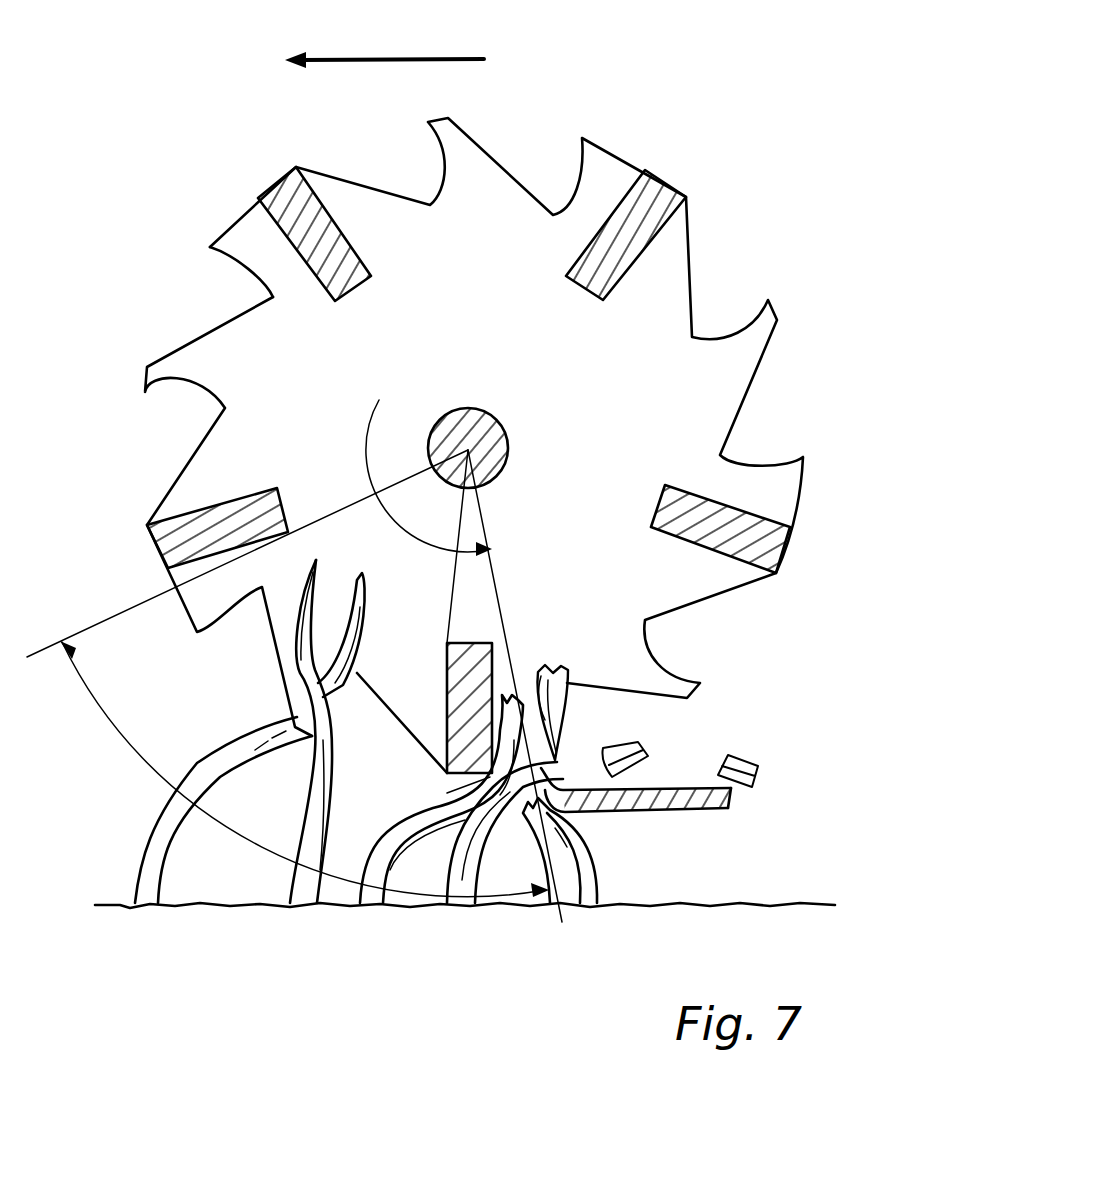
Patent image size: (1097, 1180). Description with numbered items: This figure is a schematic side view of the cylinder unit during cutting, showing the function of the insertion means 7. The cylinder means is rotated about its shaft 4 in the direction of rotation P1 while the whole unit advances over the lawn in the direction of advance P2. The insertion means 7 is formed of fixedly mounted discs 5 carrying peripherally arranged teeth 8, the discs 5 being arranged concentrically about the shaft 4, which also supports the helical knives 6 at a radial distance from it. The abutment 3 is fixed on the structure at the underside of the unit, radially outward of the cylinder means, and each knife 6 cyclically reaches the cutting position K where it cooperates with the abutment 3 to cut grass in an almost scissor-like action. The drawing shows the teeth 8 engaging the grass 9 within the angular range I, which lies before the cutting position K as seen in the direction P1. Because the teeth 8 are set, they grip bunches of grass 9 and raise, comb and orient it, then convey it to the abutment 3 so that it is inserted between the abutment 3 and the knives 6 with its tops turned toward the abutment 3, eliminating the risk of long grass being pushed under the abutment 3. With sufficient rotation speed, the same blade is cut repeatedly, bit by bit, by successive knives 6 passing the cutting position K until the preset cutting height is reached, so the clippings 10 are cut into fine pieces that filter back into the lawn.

The abutment 3 is at (667, 814).
The shaft 4 is at (510, 430).
The disc 5 is at (715, 405).
The knife 6 is at (778, 543).
The insertion means 7 is at (228, 348).
The tooth 8 is at (190, 597).
The grass 9 is at (190, 770).
The clippings 10 is at (722, 143).
The cutting position K is at (520, 770).
The direction of rotation P1 is at (429, 483).
The direction of advance P2 is at (373, 41).
The angular range I is at (294, 686).